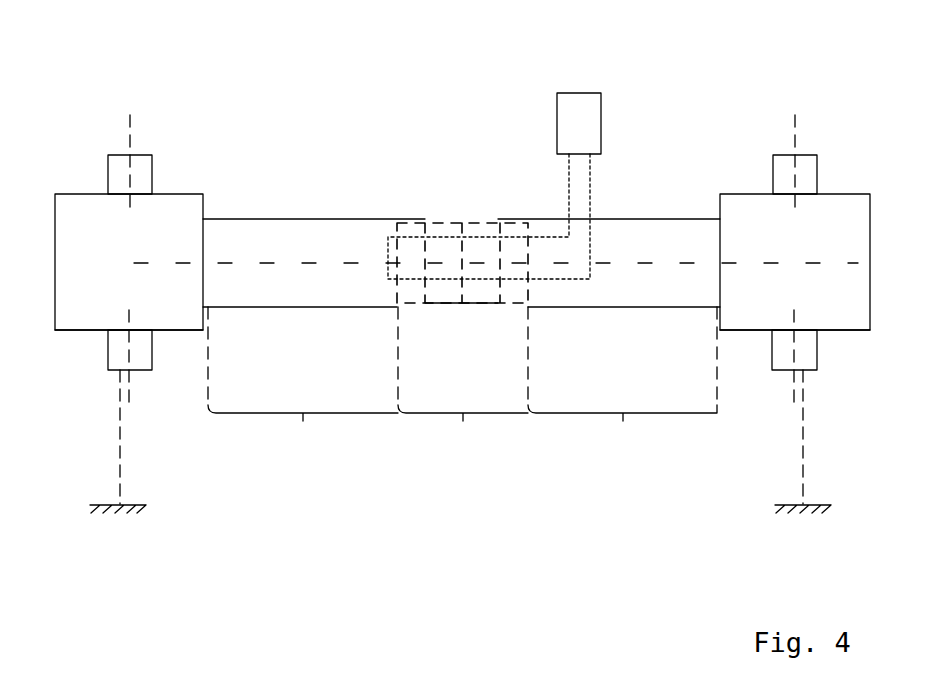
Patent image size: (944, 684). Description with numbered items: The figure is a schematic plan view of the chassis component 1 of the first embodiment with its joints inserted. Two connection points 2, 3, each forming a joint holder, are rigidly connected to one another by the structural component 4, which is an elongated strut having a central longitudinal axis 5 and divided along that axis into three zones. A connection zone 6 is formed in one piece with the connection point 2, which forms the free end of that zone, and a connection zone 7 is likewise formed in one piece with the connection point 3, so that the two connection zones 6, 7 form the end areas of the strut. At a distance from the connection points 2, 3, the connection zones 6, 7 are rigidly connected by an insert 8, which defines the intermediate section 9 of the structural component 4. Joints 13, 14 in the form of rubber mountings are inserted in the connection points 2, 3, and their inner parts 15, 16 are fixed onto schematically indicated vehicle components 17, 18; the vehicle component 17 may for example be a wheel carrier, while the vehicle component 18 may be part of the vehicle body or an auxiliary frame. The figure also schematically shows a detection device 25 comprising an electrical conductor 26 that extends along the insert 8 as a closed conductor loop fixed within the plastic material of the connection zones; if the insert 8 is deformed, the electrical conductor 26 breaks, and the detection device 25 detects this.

The chassis component 1 is at (212, 74).
The connection point 2 is at (77, 198).
The connection point 3 is at (846, 198).
The structural component 4 is at (377, 218).
The central longitudinal axis 5 is at (180, 262).
The connection zone 6 is at (303, 380).
The connection zone 7 is at (622, 380).
The insert 8 is at (483, 228).
The intermediate section 9 is at (463, 429).
The joint 13 is at (71, 341).
The joint 14 is at (842, 341).
The inner part 15 is at (148, 370).
The inner part 16 is at (783, 368).
The vehicle component 17 is at (146, 507).
The vehicle component 18 is at (776, 506).
The detection device 25 is at (572, 96).
The electrical conductor 26 is at (448, 238).